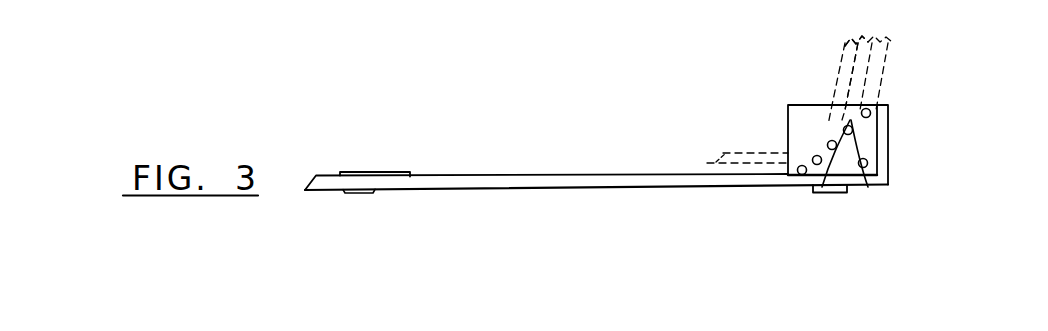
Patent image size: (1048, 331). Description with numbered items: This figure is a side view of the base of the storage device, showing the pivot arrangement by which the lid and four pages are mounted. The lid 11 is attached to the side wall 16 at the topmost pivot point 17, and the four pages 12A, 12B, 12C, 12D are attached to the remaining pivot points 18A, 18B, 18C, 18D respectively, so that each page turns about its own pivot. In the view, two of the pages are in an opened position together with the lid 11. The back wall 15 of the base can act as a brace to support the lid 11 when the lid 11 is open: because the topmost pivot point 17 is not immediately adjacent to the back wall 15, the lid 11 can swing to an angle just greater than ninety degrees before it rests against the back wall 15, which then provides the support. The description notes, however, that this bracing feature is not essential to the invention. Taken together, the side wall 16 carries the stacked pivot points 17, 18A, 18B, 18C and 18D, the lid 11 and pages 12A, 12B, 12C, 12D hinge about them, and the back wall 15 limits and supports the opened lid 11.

The lid 11 is at (890, 56).
The page 12A is at (863, 38).
The page 12B is at (843, 68).
The page 12C is at (728, 152).
The page 12D is at (700, 167).
The back wall 15 is at (888, 124).
The side wall 16 is at (790, 135).
The topmost pivot point 17 is at (880, 105).
The pivot point 18A is at (859, 167).
The pivot point 18B is at (830, 149).
The pivot point 18C is at (814, 163).
The pivot point 18D is at (798, 172).